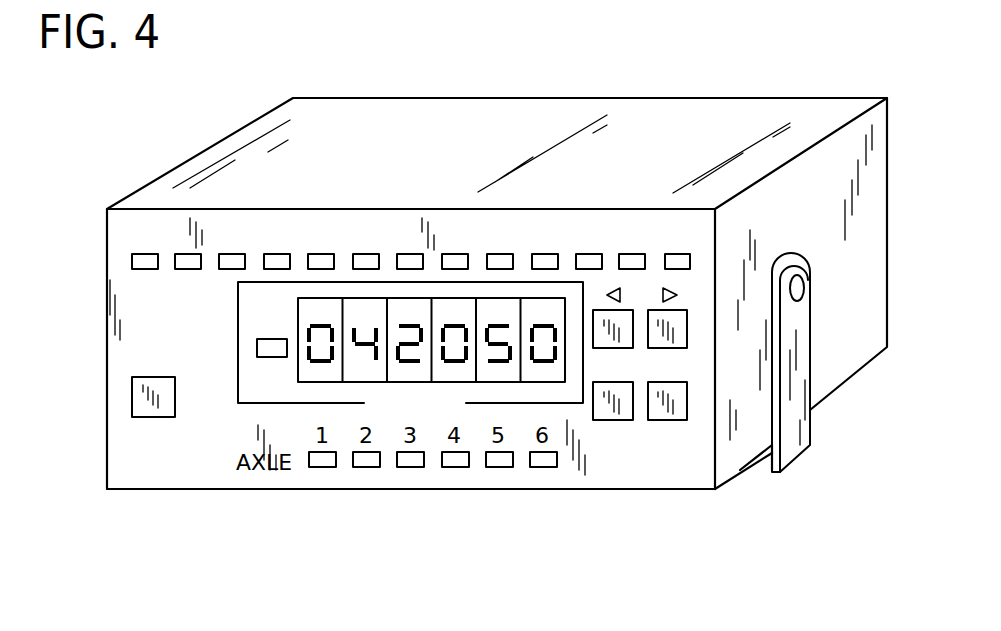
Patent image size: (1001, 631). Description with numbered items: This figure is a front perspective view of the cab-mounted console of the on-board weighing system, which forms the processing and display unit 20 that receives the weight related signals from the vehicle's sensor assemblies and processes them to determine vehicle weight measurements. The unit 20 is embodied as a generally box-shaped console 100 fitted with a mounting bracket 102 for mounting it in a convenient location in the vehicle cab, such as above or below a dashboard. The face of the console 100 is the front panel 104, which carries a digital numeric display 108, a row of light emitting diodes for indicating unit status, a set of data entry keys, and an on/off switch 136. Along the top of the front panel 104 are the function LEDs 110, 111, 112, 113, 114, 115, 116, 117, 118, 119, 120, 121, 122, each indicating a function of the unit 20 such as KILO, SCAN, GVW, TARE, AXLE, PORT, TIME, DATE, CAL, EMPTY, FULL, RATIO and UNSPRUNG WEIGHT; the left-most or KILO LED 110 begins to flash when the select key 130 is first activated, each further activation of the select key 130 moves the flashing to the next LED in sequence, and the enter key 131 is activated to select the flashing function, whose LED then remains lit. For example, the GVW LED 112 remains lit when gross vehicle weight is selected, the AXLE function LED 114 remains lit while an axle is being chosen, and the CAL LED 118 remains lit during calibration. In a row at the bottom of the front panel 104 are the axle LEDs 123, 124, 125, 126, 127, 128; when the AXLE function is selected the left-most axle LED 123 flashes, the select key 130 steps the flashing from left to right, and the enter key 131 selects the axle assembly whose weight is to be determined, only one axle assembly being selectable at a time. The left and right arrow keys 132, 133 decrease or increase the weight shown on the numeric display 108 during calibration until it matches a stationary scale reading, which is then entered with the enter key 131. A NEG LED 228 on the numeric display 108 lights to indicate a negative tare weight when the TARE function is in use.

The processing and display unit 20 is at (78, 310).
The console 100 is at (840, 388).
The mounting bracket 102 is at (797, 452).
The front panel 104 is at (158, 490).
The digital numeric display 108 is at (255, 402).
The KILO LED 110 is at (132, 262).
The function LED 111 is at (188, 254).
The GVW LED 112 is at (232, 254).
The function LED 113 is at (277, 254).
The AXLE function LED 114 is at (319, 254).
The function LED 115 is at (368, 254).
The function LED 116 is at (406, 254).
The function LED 117 is at (452, 254).
The CAL LED 118 is at (499, 254).
The function LED 119 is at (540, 254).
The function LED 120 is at (588, 254).
The function LED 121 is at (632, 254).
The function LED 122 is at (674, 254).
The axle LED 123 is at (322, 468).
The axle LED 124 is at (365, 468).
The axle LED 125 is at (409, 468).
The axle LED 126 is at (453, 468).
The axle LED 127 is at (498, 468).
The axle LED 128 is at (541, 468).
The select key 130 is at (608, 420).
The enter key 131 is at (687, 400).
The left arrow key 132 is at (625, 310).
The right arrow key 133 is at (687, 330).
The on/off switch 136 is at (132, 395).
The NEG LED 228 is at (257, 348).